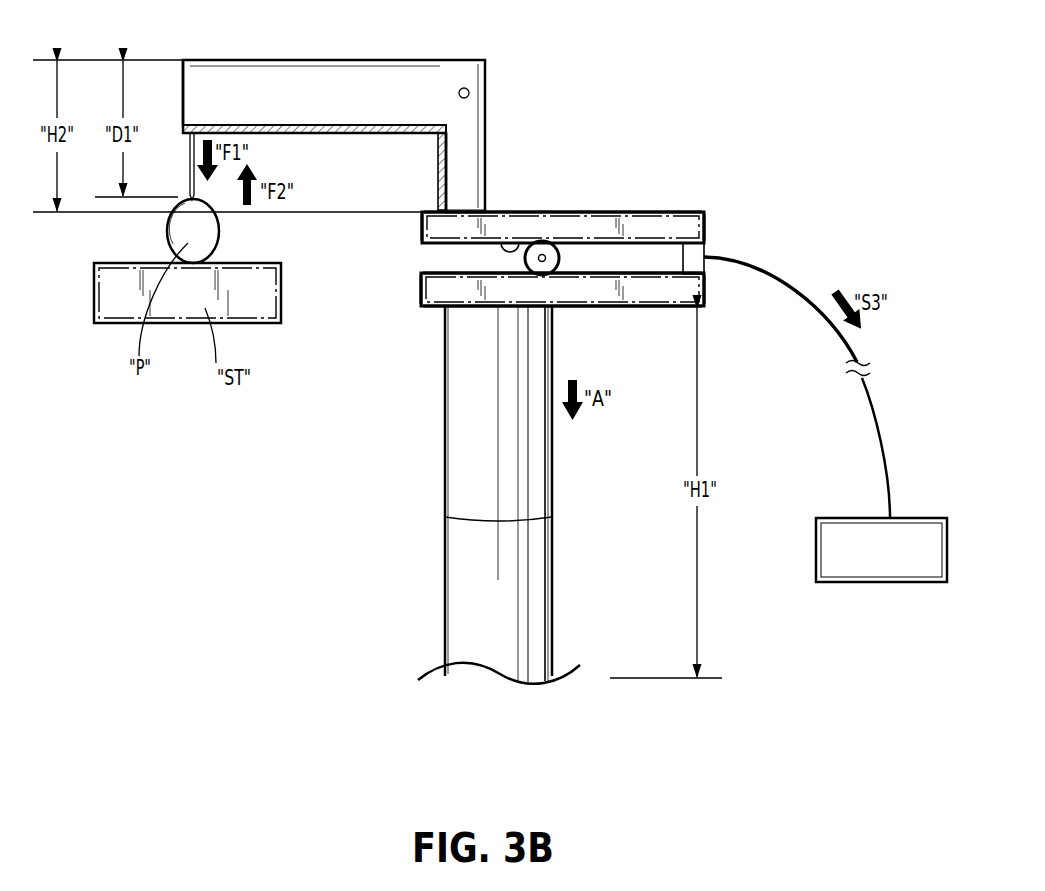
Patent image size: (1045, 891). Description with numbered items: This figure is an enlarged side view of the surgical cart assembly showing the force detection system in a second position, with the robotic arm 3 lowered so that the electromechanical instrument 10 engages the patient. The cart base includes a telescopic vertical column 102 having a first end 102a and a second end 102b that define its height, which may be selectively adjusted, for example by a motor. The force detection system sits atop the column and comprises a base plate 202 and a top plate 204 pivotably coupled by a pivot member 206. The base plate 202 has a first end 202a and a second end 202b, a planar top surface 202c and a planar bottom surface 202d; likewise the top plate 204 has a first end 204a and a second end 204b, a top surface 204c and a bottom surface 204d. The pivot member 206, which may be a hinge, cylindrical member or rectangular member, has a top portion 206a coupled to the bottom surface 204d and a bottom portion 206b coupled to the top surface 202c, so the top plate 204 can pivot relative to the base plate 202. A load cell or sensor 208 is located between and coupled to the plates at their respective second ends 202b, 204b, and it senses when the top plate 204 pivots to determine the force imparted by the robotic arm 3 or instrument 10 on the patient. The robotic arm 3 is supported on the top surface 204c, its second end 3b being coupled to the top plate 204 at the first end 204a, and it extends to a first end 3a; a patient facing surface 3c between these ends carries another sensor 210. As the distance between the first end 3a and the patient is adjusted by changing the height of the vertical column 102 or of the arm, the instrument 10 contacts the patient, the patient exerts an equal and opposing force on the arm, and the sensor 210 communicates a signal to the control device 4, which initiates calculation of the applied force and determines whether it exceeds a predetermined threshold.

The robotic arm 3 is at (492, 133).
The first end of robotic arm 3a is at (183, 93).
The second end of robotic arm 3b is at (443, 208).
The patient facing surface 3c is at (352, 142).
The electromechanical instrument 10 is at (190, 148).
The sensor 210 is at (272, 125).
The control device 4 is at (881, 550).
The vertical column 102 is at (592, 520).
The first end of vertical column 102a is at (553, 313).
The second end of vertical column 102b is at (533, 665).
The base plate 202 is at (596, 290).
The first end of base plate 202a is at (423, 287).
The second end of base plate 202b is at (702, 292).
The top surface of base plate 202c is at (450, 277).
The bottom surface of base plate 202d is at (473, 306).
The top plate 204 is at (634, 227).
The first end of top plate 204a is at (423, 229).
The second end of top plate 204b is at (700, 213).
The top surface of top plate 204c is at (598, 211).
The bottom surface of top plate 204d is at (504, 243).
The pivot member 206 is at (542, 241).
The top portion of pivot member 206a is at (542, 258).
The bottom portion of pivot member 206b is at (539, 275).
The load cell or sensor 208 is at (694, 256).